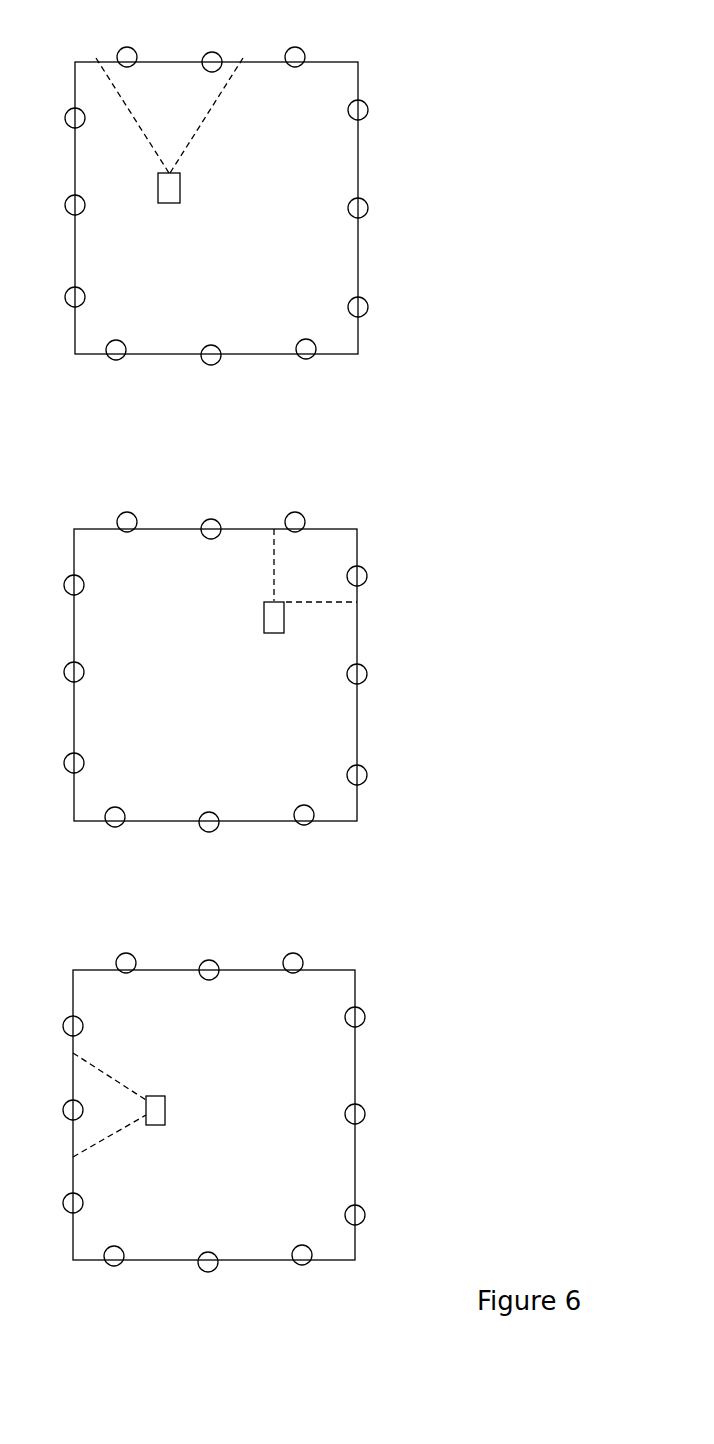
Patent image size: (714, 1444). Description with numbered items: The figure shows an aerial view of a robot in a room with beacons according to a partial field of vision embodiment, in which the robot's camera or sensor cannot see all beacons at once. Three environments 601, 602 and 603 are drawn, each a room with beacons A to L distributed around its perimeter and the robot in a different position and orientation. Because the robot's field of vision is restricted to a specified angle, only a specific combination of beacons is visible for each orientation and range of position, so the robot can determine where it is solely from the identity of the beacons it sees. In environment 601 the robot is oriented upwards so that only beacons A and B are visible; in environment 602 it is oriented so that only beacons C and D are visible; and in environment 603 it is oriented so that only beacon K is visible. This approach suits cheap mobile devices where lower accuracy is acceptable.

The environment 601 is at (340, 206).
The environment 602 is at (334, 671).
The environment 603 is at (339, 1111).